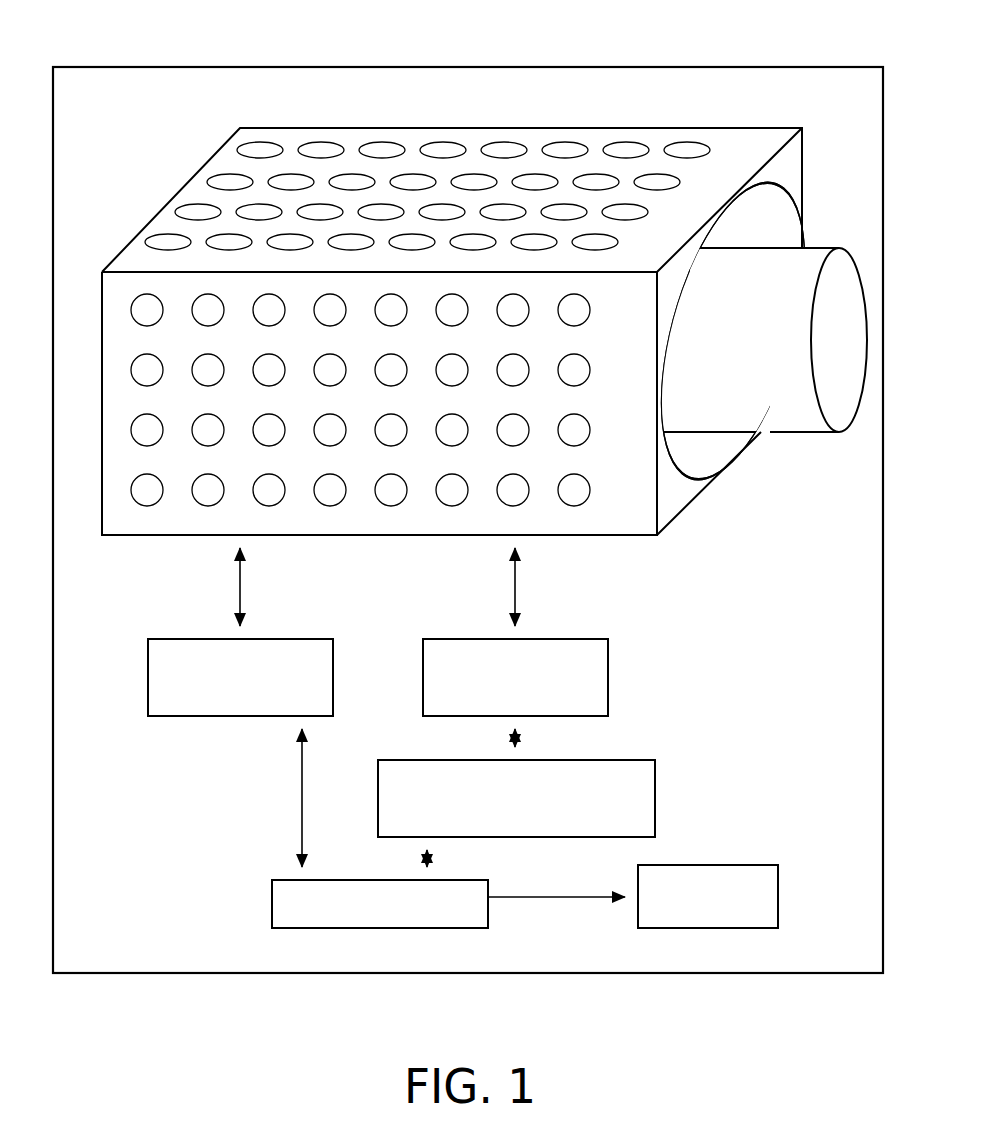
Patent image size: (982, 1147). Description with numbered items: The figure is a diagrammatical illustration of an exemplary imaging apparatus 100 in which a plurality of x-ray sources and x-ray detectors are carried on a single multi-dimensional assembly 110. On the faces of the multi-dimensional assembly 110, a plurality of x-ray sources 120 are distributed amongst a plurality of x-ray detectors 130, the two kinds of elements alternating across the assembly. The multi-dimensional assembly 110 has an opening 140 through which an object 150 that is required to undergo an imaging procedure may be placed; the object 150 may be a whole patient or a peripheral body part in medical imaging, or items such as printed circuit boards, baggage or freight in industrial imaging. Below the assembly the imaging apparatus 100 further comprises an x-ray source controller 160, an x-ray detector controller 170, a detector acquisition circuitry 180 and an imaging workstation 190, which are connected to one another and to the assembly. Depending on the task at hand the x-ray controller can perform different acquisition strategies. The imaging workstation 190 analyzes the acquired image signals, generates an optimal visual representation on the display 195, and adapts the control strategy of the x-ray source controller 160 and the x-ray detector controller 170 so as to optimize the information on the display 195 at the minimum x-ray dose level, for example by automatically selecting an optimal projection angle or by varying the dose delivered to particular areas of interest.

The imaging apparatus 100 is at (168, 66).
The multi-dimensional assembly 110 is at (303, 126).
The x-ray sources 120 is at (385, 144).
The x-ray detectors 130 is at (566, 144).
The opening 140 is at (710, 462).
The object 150 is at (805, 424).
The x-ray source controller 160 is at (355, 600).
The x-ray detector controller 170 is at (609, 653).
The detector acquisition circuitry 180 is at (628, 760).
The imaging workstation 190 is at (272, 897).
The display 195 is at (722, 865).